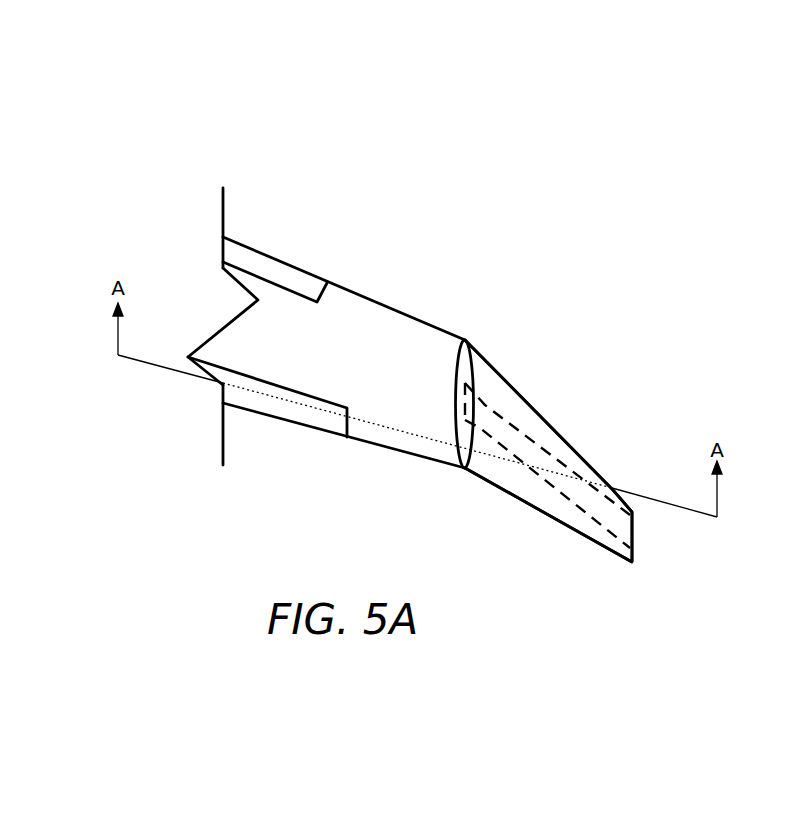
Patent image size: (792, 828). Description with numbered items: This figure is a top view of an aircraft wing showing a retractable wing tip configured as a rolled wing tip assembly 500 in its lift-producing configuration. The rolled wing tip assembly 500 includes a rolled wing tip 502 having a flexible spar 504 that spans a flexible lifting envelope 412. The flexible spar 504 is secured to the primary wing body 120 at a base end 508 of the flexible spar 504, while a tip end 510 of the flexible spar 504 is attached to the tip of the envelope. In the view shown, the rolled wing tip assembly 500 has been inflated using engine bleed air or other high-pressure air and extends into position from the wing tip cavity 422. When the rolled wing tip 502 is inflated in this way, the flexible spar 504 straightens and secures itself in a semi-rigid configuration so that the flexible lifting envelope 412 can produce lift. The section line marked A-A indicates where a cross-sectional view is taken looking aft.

The primary wing body 120 is at (343, 302).
The rolled wing tip assembly 500 is at (527, 168).
The rolled wing tip 502 is at (595, 430).
The flexible spar 504 is at (522, 445).
The base end 508 is at (470, 398).
The tip end 510 is at (630, 535).
The flexible lifting envelope 412 is at (525, 492).
The wing tip cavity 422 is at (460, 436).